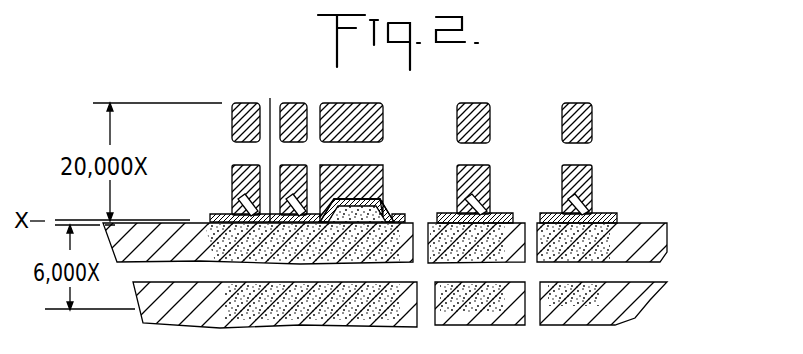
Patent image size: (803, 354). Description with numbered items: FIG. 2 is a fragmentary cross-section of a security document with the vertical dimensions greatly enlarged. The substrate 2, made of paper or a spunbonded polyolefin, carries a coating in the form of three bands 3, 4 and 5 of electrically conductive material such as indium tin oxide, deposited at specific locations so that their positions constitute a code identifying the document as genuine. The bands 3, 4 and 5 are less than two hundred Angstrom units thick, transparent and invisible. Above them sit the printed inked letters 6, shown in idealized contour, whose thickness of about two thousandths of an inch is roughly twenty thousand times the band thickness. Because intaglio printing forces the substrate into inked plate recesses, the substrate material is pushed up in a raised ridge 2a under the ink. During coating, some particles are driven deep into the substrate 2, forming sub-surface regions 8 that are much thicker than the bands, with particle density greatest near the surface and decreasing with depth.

The substrate 2 is at (660, 287).
The raised ridge 2a is at (347, 205).
The band 3 is at (269, 145).
The band 4 is at (501, 222).
The band 5 is at (601, 218).
The inked letters 6 is at (248, 110).
The sub-surface regions 8 is at (223, 248).